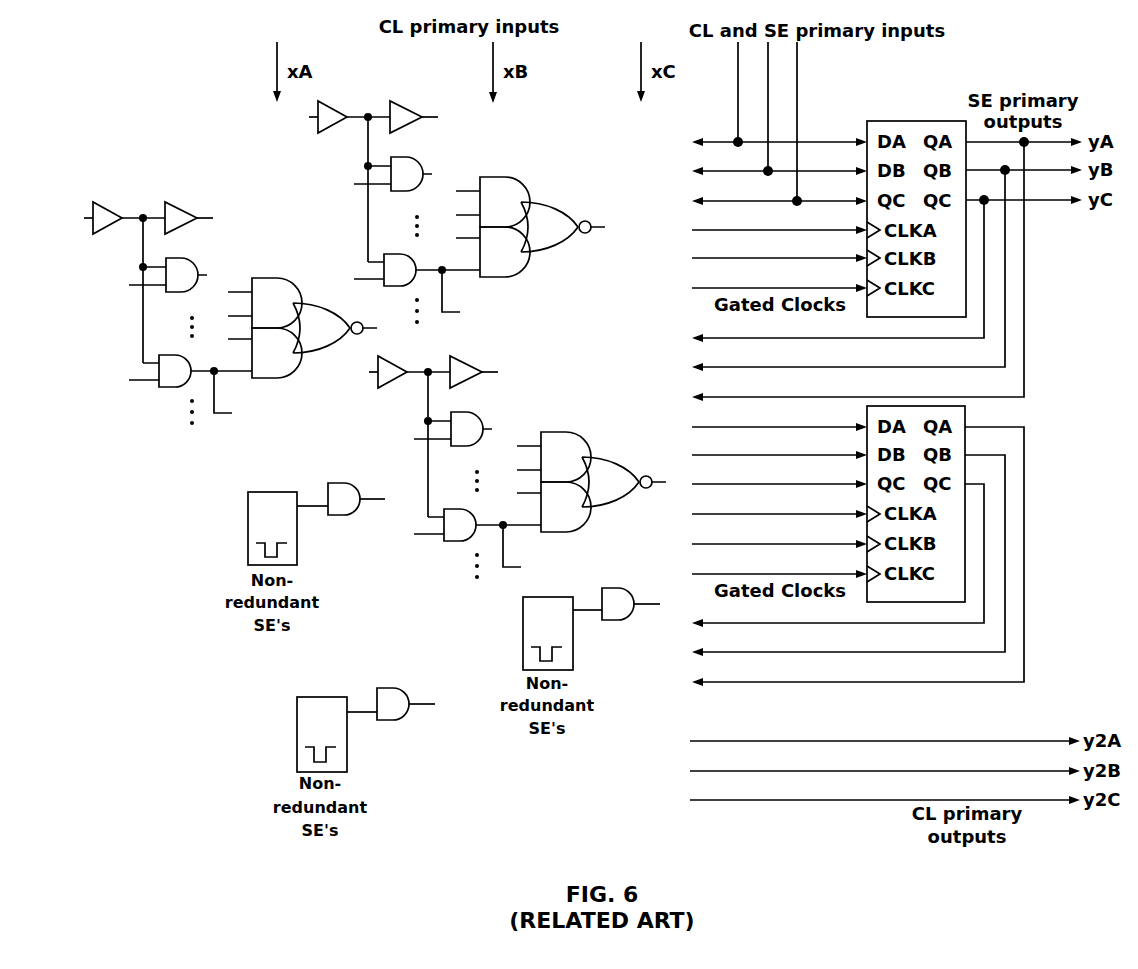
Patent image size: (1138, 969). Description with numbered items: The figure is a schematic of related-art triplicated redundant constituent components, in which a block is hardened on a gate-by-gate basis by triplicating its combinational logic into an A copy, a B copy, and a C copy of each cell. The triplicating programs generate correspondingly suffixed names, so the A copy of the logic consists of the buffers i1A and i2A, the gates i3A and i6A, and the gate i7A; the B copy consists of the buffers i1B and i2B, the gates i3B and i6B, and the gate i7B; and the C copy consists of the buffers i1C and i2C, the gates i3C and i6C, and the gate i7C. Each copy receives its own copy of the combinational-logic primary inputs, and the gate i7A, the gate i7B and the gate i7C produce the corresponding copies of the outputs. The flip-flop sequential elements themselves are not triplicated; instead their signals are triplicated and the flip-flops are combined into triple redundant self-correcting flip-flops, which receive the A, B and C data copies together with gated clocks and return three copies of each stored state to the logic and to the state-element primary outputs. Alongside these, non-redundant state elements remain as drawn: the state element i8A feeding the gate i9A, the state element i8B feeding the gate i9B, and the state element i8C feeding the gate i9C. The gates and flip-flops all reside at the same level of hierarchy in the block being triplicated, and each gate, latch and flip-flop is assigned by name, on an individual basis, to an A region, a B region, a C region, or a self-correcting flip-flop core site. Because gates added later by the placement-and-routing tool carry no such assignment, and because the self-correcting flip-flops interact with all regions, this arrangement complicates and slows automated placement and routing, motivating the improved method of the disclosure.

The input buffer for xA i1A is at (124, 207).
The buffer for xA i2A is at (189, 207).
The AND gate of group A i3A is at (168, 287).
The AND gate of group A i6A is at (190, 384).
The NOR/OR gate of group A i7A is at (302, 341).
The input buffer for xB i1B is at (349, 106).
The buffer for xB i2B is at (414, 106).
The AND gate of group B i3B is at (393, 186).
The AND gate of group B i6B is at (417, 283).
The NOR/OR gate of group B i7B is at (530, 240).
The input buffer for xC i1C is at (409, 361).
The buffer for xC i2C is at (474, 361).
The AND gate of group C i3C is at (453, 441).
The AND gate of group C i6C is at (477, 538).
The NOR/OR gate of group C i7C is at (591, 495).
The non-redundant state element (flip-flop) A i8A is at (337, 722).
The AND gate fed by state element A i9A is at (406, 691).
The non-redundant state element (flip-flop) B i8B is at (562, 621).
The AND gate fed by state element B i9B is at (631, 591).
The non-redundant state element (flip-flop) C i8C is at (288, 516).
The AND gate fed by state element C i9C is at (356, 487).